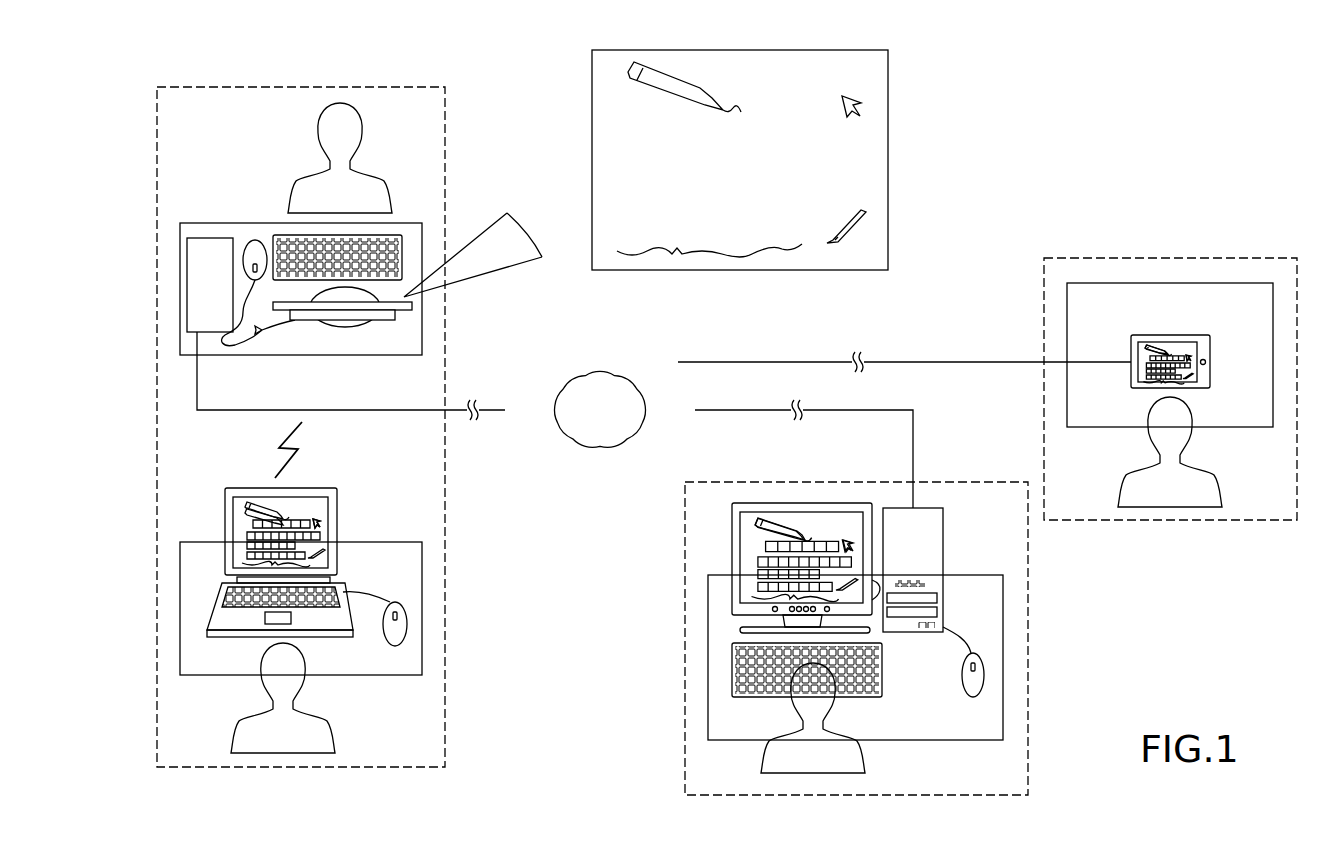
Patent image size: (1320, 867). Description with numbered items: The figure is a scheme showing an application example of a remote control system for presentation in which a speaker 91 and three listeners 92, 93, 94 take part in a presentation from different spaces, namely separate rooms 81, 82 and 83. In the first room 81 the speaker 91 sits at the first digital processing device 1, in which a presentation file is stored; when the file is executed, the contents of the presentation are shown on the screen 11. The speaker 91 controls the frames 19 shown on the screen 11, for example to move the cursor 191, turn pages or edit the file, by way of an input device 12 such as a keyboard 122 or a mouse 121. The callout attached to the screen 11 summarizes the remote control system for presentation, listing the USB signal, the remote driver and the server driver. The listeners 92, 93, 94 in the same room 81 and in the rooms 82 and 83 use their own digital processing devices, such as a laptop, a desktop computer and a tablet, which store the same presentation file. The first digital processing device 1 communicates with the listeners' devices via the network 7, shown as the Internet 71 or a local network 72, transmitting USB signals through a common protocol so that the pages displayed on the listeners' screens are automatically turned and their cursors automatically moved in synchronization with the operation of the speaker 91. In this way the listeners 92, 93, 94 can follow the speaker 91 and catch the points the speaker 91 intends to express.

The first digital processing device 1 is at (260, 342).
The screen 11 is at (385, 312).
The input device 12 is at (289, 251).
The mouse 121 is at (250, 253).
The keyboard 122 is at (333, 238).
The frames 19 is at (877, 177).
The cursor 191 is at (842, 96).
The network 7 is at (664, 407).
The Internet 71 is at (575, 348).
The local network 72 is at (283, 452).
The room 81 is at (225, 78).
The room 82 is at (958, 472).
The room 83 is at (1228, 247).
The speaker 91 is at (365, 182).
The listener 92 is at (308, 730).
The listener 93 is at (833, 750).
The listener 94 is at (1193, 487).